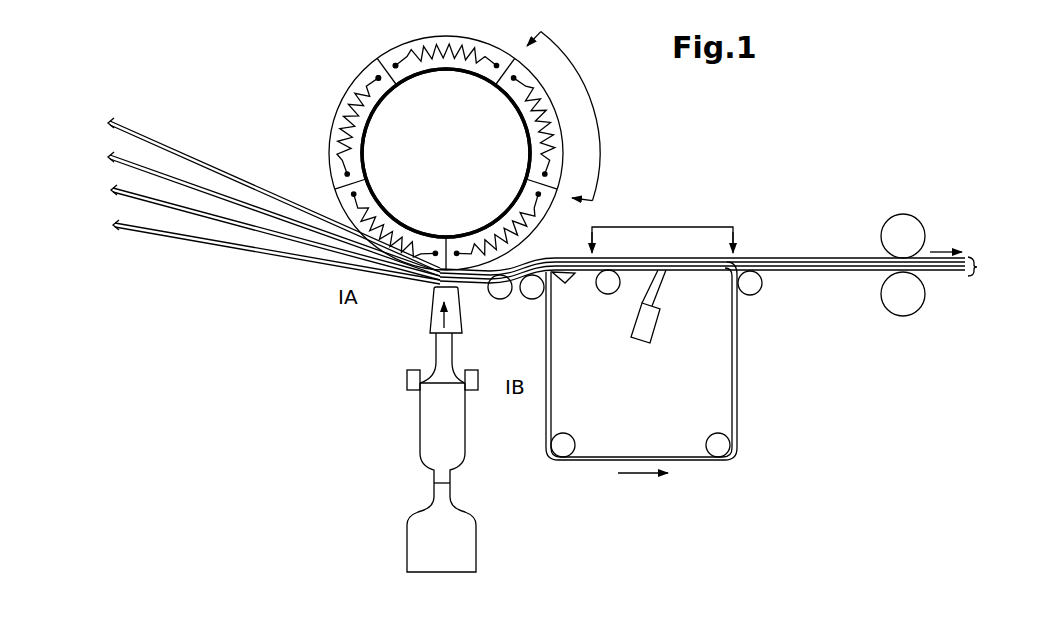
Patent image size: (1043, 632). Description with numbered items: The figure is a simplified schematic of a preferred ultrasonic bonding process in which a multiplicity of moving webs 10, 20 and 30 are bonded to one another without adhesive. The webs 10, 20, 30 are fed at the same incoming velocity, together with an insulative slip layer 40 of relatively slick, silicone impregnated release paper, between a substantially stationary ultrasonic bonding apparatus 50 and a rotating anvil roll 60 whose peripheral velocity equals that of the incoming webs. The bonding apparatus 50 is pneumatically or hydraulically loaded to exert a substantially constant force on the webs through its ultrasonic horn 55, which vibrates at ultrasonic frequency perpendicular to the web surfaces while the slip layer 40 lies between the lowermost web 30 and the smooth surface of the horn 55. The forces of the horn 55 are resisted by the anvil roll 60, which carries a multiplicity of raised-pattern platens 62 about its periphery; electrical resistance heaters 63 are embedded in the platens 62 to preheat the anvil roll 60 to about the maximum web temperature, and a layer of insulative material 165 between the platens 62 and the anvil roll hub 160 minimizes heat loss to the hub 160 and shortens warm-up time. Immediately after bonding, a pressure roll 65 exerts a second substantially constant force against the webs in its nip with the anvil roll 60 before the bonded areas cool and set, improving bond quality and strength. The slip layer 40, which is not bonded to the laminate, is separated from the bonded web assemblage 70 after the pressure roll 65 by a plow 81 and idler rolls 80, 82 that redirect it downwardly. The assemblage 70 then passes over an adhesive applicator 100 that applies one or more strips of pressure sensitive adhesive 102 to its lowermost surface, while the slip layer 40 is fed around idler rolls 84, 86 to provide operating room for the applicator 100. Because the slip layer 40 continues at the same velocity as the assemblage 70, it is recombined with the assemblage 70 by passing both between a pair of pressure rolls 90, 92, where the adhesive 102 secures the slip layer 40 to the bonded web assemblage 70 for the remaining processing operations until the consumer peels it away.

The moving web 10 is at (150, 135).
The moving web 20 is at (193, 186).
The moving web 30 is at (207, 217).
The insulative slip layer 40 is at (160, 234).
The ultrasonic bonding apparatus 50 is at (478, 488).
The ultrasonic horn 55 is at (432, 308).
The anvil roll 60 is at (327, 157).
The platens 62 is at (453, 38).
The electrical resistance heaters 63 is at (393, 66).
The pressure roll 65 is at (498, 300).
The bonded web assemblage 70 is at (978, 267).
The idler roll 80 is at (538, 300).
The plow 81 is at (567, 283).
The idler roll 82 is at (608, 294).
The idler roll 84 is at (565, 433).
The idler roll 86 is at (718, 433).
The pressure roll 90 is at (885, 304).
The pressure roll 92 is at (890, 222).
The adhesive applicator 100 is at (660, 324).
The pressure sensitive adhesive 102 is at (664, 278).
The anvil roll hub 160 is at (462, 131).
The layer of insulative material 165 is at (526, 131).